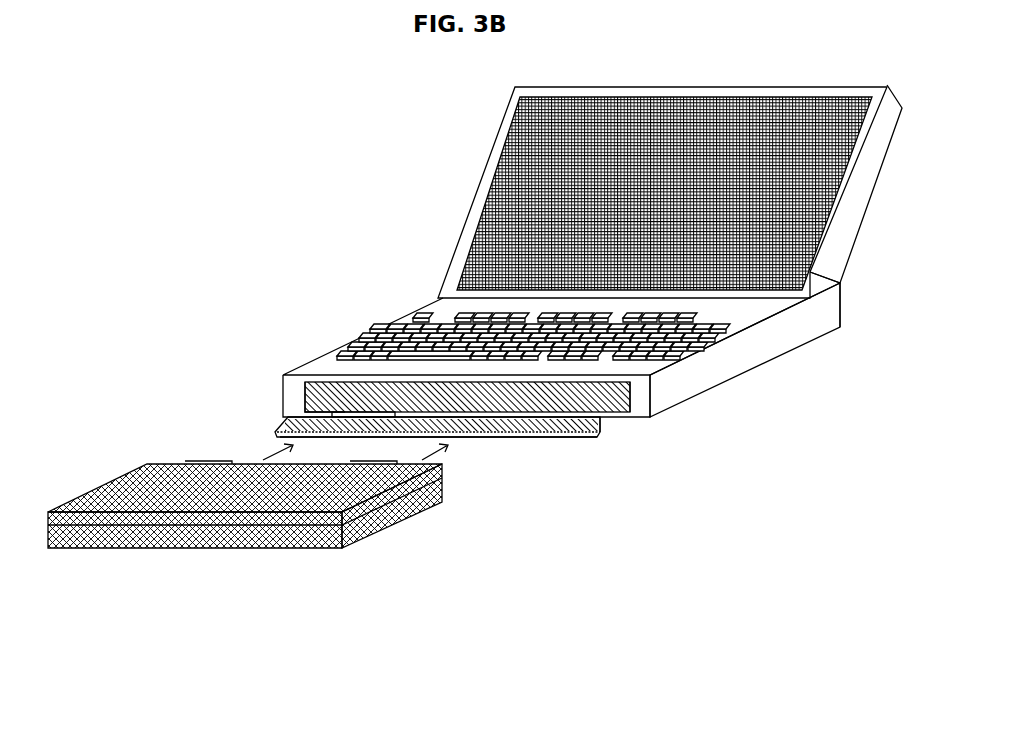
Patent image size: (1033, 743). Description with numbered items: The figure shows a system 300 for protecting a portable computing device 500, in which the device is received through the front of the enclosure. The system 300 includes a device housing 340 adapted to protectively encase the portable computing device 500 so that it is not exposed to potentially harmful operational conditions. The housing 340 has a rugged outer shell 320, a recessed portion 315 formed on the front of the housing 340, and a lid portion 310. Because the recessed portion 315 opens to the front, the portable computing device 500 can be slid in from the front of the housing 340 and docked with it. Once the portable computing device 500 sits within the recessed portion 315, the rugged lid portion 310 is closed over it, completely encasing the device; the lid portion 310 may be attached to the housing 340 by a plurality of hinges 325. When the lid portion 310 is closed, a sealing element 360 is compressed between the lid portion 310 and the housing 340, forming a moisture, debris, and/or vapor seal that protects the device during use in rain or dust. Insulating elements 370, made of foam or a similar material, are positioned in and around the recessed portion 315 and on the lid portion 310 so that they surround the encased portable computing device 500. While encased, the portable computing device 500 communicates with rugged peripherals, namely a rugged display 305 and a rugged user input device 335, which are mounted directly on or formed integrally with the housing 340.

The system 300 is at (345, 185).
The rugged display 305 is at (533, 158).
The rugged user input device 335 is at (380, 333).
The rugged outer shell 320 is at (710, 367).
The device housing 340 is at (693, 407).
The hinges 325 is at (315, 408).
The recessed portion 315 is at (537, 393).
The sealing element 360 is at (553, 436).
The lid portion 310 is at (582, 438).
The insulating elements 370 is at (627, 409).
The portable computing device 500 is at (178, 543).